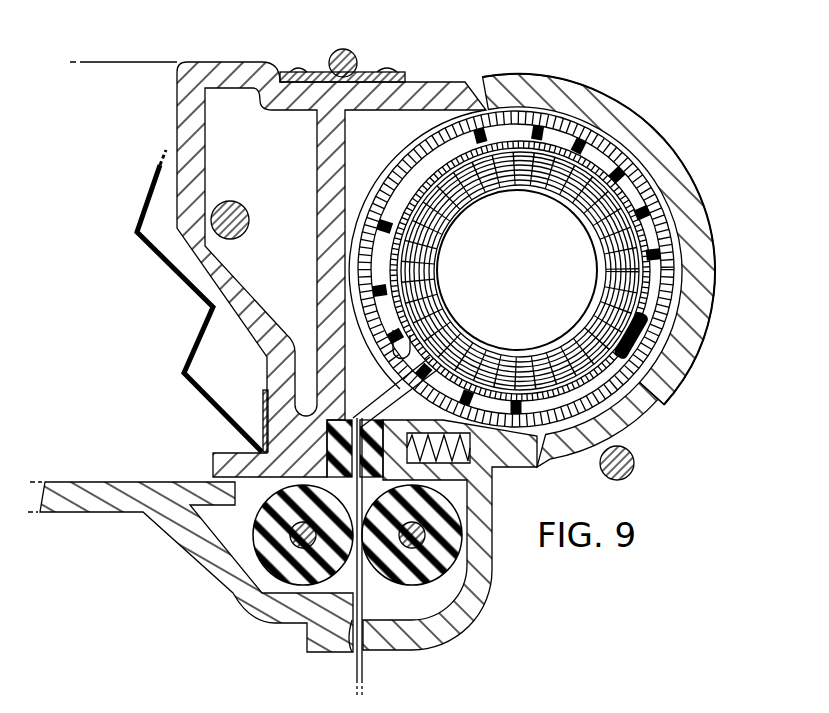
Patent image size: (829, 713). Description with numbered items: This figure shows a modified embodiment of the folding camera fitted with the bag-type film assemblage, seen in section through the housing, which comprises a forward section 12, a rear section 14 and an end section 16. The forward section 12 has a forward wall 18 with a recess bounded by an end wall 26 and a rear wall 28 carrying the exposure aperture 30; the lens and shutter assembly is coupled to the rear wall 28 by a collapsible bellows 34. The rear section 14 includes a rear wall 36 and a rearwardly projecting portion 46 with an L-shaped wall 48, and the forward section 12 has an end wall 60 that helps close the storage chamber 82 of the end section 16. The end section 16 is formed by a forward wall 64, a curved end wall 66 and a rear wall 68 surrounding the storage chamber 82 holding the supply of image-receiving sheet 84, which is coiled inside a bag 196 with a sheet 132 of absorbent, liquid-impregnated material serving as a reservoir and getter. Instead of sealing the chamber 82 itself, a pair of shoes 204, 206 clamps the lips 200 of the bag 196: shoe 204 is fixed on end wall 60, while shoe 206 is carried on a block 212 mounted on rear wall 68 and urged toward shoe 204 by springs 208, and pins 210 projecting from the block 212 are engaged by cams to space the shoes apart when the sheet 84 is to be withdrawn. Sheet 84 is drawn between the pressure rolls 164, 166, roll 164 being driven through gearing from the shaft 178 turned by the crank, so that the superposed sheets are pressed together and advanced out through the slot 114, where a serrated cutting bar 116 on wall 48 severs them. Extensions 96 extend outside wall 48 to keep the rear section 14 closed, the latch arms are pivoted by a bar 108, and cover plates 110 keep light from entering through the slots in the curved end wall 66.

The forward section 12 is at (197, 62).
The rear section 14 is at (82, 520).
The end section 16 is at (543, 78).
The forward wall 18 is at (267, 64).
The end wall 26 is at (178, 124).
The rear wall 28 is at (198, 431).
The exposure aperture 30 is at (213, 463).
The bellows 34 is at (153, 260).
The rear wall 36 is at (60, 497).
The portion 46 is at (283, 630).
The wall 48 is at (247, 612).
The end wall 60 is at (317, 156).
The forward wall 64 is at (500, 95).
The curved end wall 66 is at (703, 277).
The rear wall 68 is at (515, 455).
The storage chamber 82 is at (388, 123).
The image-receiving sheet 84 is at (592, 186).
The extensions 96 is at (322, 637).
The bar 108 is at (636, 470).
The cover plates 110 is at (650, 428).
The slot 114 is at (365, 652).
The cutting bar 116 is at (348, 650).
The sheet 132 is at (622, 332).
The pressure roll 164 is at (267, 553).
The pressure roll 166 is at (460, 600).
The shaft 178 is at (215, 205).
The bag 196 is at (439, 126).
The lips 200 is at (350, 417).
The shoe 204 is at (262, 415).
The shoe 206 is at (378, 565).
The springs 208 is at (497, 500).
The pins 210 is at (470, 548).
The block 212 is at (495, 540).